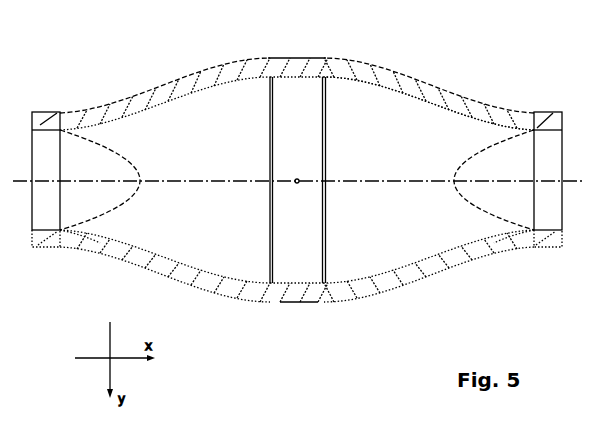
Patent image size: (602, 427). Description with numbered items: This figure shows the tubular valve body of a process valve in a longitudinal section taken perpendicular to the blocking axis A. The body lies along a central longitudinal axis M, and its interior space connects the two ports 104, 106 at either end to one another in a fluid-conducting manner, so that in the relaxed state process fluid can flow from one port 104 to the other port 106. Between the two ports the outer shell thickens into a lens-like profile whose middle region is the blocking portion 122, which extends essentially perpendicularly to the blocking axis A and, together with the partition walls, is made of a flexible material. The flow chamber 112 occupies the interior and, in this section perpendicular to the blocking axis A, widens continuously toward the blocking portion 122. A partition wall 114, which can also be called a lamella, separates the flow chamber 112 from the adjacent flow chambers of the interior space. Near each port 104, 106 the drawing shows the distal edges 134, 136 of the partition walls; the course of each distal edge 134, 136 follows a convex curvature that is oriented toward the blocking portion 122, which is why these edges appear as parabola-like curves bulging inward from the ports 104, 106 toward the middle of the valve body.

The port 104 is at (40, 113).
The port 106 is at (553, 120).
The flow chamber 112 is at (405, 122).
The partition wall 114 is at (447, 134).
The blocking portion 122 is at (265, 310).
The distal edge 134 is at (495, 207).
The distal edge 136 is at (99, 207).
The blocking axis A is at (297, 179).
The central longitudinal axis M is at (70, 176).